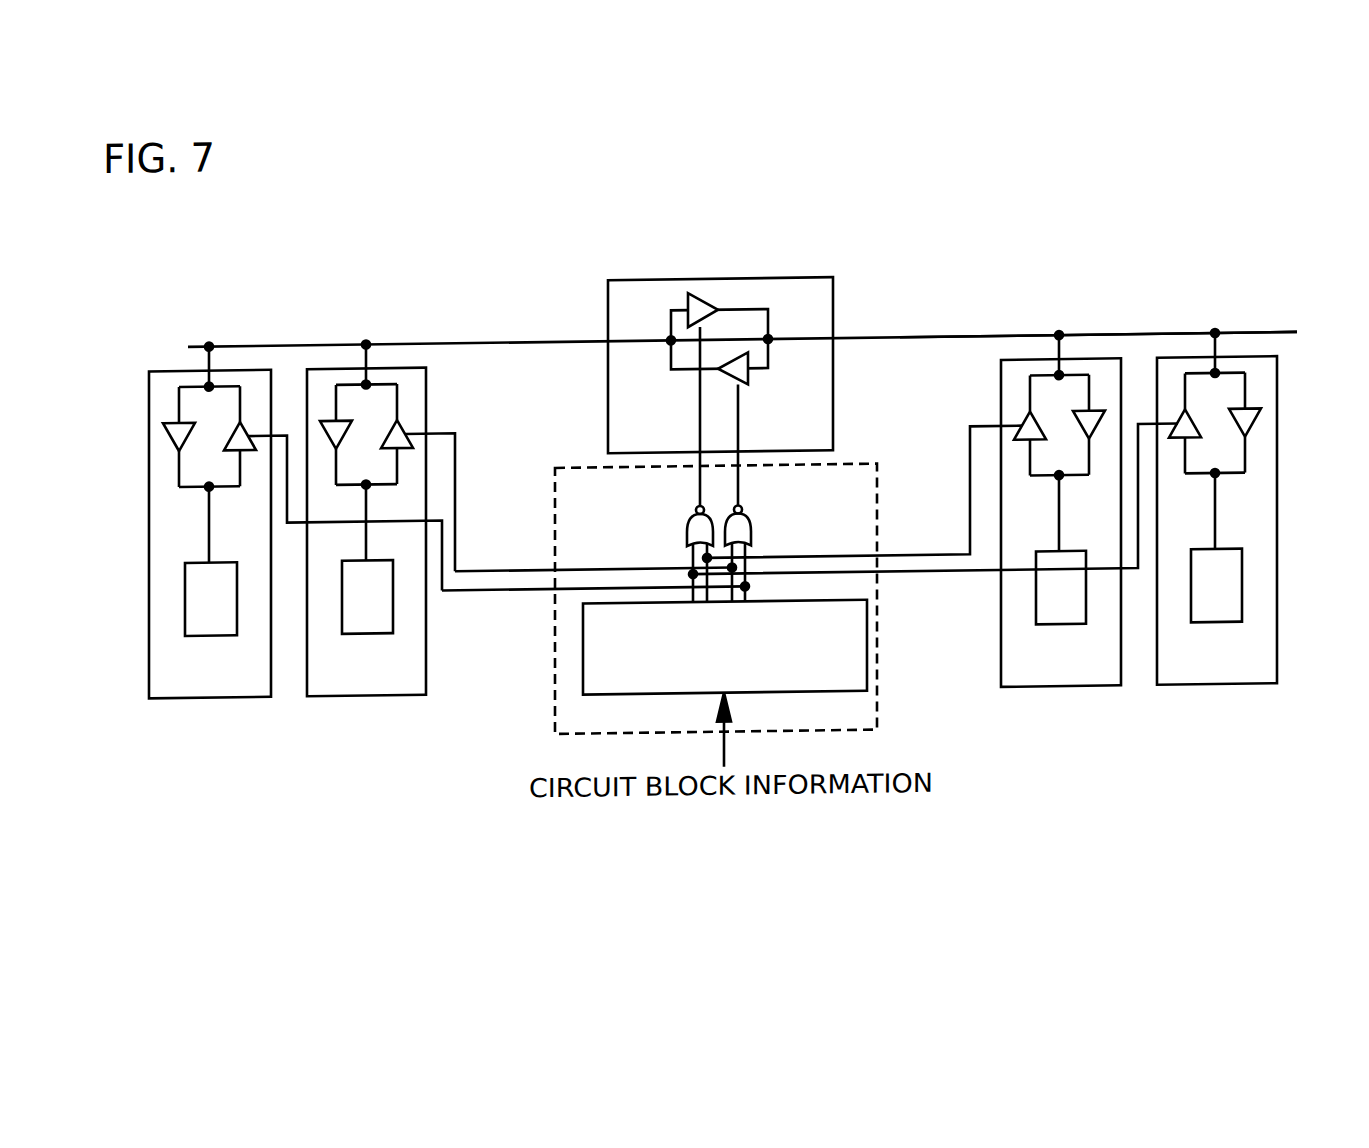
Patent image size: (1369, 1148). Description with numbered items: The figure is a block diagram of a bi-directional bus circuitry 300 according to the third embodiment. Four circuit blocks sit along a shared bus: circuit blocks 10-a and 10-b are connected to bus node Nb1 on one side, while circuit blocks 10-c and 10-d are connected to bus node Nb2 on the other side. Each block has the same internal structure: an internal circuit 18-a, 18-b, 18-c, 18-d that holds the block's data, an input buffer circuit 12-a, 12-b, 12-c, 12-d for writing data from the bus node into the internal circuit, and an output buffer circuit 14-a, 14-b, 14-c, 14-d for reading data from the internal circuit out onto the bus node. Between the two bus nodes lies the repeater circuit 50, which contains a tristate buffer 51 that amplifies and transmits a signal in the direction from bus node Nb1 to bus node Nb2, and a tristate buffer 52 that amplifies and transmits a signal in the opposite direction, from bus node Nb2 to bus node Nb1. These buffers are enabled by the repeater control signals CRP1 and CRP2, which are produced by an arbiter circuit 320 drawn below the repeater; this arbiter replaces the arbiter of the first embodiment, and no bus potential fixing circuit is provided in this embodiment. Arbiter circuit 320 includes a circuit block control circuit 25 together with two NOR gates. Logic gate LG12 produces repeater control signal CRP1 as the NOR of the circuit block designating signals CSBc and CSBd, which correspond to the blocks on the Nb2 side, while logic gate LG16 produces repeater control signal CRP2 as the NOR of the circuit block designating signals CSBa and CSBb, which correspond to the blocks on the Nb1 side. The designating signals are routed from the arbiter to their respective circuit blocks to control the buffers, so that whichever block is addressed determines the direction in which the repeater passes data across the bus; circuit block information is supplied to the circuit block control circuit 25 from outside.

The bi-directional bus circuitry 300 is at (1232, 270).
The repeater circuit 50 is at (720, 333).
The tristate buffer 51 is at (706, 302).
The tristate buffer 52 is at (749, 378).
The circuit block control circuit 25 is at (867, 653).
The arbiter circuit 320 is at (763, 598).
The circuit block 10-a is at (258, 545).
The circuit block 10-b is at (388, 526).
The circuit block 10-c is at (1040, 514).
The circuit block 10-d is at (1254, 533).
The input buffer circuit 12-a is at (168, 432).
The input buffer circuit 12-b is at (331, 414).
The input buffer circuit 12-c is at (1018, 431).
The input buffer circuit 12-d is at (1190, 420).
The output buffer circuit 14-a is at (232, 431).
The output buffer circuit 14-b is at (412, 434).
The output buffer circuit 14-c is at (1096, 413).
The output buffer circuit 14-d is at (1254, 431).
The internal circuit 18-a is at (216, 629).
The internal circuit 18-b is at (372, 629).
The internal circuit 18-c is at (1063, 629).
The internal circuit 18-d is at (1218, 629).
The bus node Nb1 is at (412, 340).
The bus node Nb2 is at (987, 340).
The repeater control signal CRP1 is at (656, 433).
The repeater control signal CRP2 is at (778, 433).
The logic gate LG12 is at (688, 527).
The logic gate LG16 is at (752, 524).
The circuit block designating signal CSBa is at (595, 599).
The circuit block designating signal CSBb is at (595, 555).
The circuit block designating signal CSBc is at (862, 494).
The circuit block designating signal CSBd is at (933, 513).